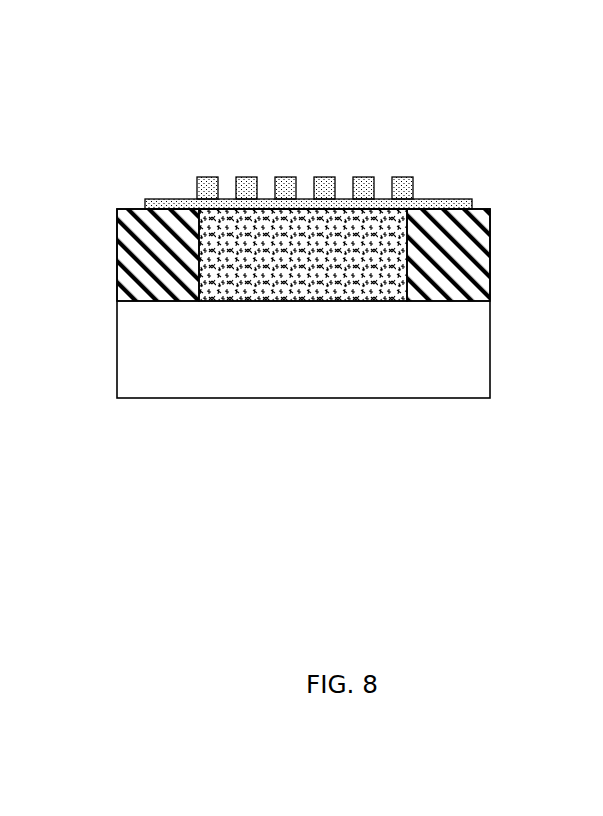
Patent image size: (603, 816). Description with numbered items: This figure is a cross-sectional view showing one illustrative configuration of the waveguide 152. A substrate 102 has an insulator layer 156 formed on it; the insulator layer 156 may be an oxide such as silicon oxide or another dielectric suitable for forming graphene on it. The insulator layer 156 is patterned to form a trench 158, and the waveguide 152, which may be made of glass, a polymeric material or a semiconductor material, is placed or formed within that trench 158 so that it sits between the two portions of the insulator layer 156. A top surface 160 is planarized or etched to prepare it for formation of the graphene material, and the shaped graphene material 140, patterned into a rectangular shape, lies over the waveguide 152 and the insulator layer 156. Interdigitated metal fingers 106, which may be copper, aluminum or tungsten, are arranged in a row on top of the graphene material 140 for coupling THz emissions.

The substrate 102 is at (215, 399).
The interdigitated metal fingers 106 is at (413, 168).
The shaped graphene material 140 is at (155, 198).
The waveguide 152 is at (290, 275).
The insulator layer 156 is at (116, 240).
The trench 158 is at (383, 293).
The top surface 160 is at (484, 208).